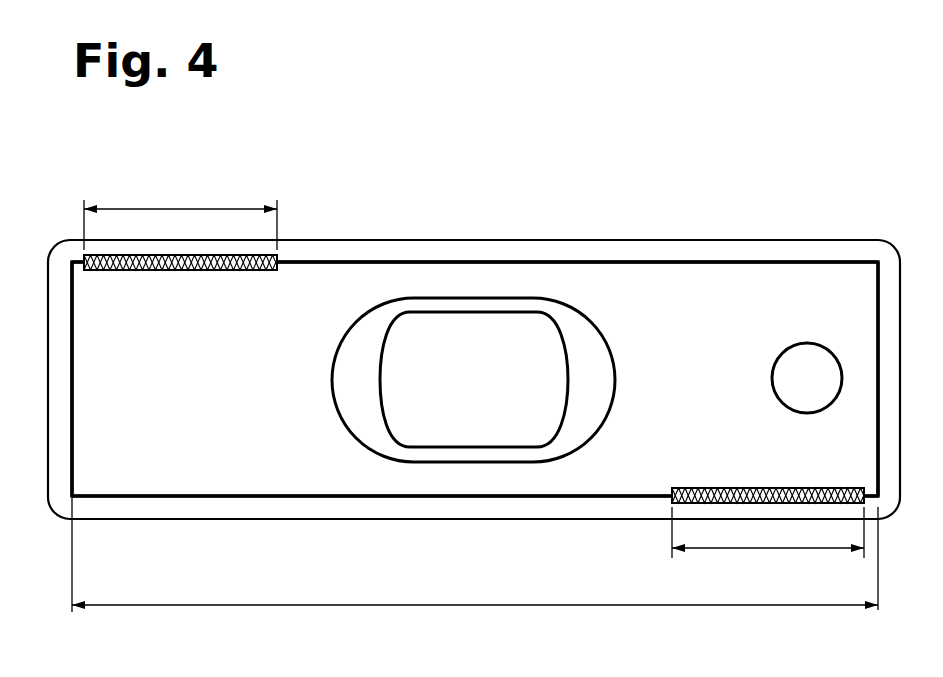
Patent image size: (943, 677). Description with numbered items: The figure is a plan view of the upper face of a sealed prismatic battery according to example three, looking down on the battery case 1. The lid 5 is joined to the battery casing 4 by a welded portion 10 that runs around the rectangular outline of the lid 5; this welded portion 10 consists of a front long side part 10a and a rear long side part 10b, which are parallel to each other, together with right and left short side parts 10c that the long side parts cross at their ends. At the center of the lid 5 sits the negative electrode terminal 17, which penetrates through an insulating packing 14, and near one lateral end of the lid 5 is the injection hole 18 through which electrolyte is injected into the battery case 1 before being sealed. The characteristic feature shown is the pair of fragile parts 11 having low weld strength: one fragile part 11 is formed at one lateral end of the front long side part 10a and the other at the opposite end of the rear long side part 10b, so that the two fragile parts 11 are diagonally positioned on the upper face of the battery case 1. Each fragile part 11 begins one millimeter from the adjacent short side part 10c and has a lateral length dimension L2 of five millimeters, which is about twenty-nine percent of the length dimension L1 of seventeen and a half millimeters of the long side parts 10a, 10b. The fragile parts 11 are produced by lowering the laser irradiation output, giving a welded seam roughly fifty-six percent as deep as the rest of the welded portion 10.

The battery case 1 is at (719, 224).
The battery casing 4 is at (288, 519).
The lid 5 is at (327, 292).
The welded portion 10 is at (421, 497).
The front long side part 10a is at (548, 497).
The rear long side part 10b is at (490, 262).
The short side part 10c is at (878, 300).
The fragile part 11 is at (142, 270).
The insulating packing 14 is at (592, 405).
The negative electrode terminal 17 is at (547, 353).
The injection hole 18 is at (771, 373).
The length dimension of the long side parts L1 is at (482, 606).
The lateral length dimension of the fragile part L2 is at (153, 208).